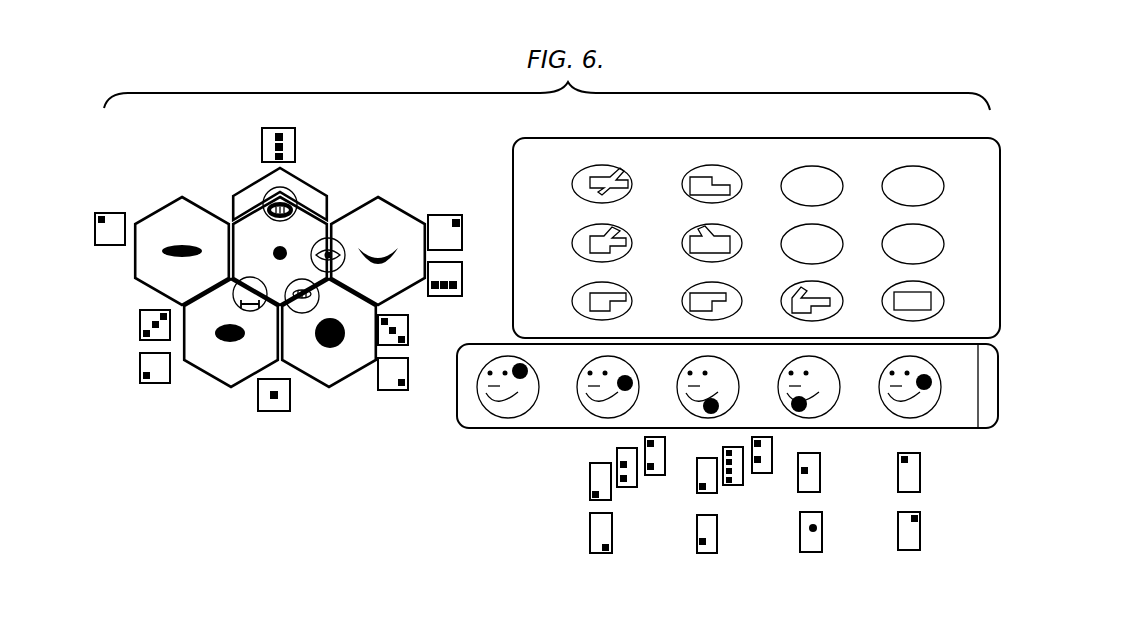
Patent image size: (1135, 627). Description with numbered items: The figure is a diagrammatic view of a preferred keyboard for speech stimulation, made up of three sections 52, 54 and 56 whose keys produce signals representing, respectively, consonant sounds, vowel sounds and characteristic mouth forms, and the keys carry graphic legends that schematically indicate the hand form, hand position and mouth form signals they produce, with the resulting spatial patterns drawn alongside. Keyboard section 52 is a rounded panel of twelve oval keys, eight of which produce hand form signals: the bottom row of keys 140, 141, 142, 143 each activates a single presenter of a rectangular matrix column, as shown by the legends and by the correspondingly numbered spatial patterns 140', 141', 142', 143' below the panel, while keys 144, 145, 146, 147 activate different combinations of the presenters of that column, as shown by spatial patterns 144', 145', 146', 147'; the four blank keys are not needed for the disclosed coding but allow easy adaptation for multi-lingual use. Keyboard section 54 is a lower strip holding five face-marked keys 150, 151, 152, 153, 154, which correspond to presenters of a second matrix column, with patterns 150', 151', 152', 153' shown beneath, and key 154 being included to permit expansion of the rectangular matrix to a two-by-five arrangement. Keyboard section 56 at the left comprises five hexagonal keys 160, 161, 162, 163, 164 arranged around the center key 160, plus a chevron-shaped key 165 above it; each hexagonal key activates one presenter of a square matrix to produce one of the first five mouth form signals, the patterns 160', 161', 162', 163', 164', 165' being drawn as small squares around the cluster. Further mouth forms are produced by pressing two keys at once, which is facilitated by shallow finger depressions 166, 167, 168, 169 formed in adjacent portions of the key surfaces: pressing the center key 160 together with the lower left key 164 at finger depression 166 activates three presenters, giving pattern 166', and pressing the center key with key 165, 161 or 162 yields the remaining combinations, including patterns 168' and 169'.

The keyboard section 52 is at (510, 133).
The keyboard section 54 is at (454, 432).
The keyboard section 56 is at (185, 155).
The key 140 is at (929, 290).
The key 141 is at (828, 290).
The key 142 is at (729, 290).
The key 143 is at (581, 295).
The key 144 is at (727, 231).
The key 145 is at (695, 174).
The key 146 is at (582, 177).
The key 147 is at (581, 236).
The key 150 is at (891, 382).
The key 151 is at (790, 382).
The key 152 is at (689, 382).
The key 153 is at (589, 382).
The key 154 is at (490, 358).
The center key 160 is at (232, 189).
The key 161 is at (329, 354).
The key 162 is at (378, 231).
The key 163 is at (182, 243).
The lower left key 164 is at (231, 352).
The chevron-shaped key 165 is at (302, 191).
The finger depression 166 is at (280, 254).
The finger depression 167 is at (286, 196).
The finger depression 168 is at (347, 247).
The finger depression 169 is at (324, 300).
The spatial pattern 140' is at (941, 472).
The spatial pattern 141' is at (834, 472).
The spatial pattern 142' is at (694, 464).
The spatial pattern 143' is at (570, 484).
The spatial pattern 144' is at (748, 479).
The spatial pattern 145' is at (792, 455).
The spatial pattern 146' is at (665, 474).
The spatial pattern 147' is at (590, 463).
The spatial pattern 150' is at (946, 531).
The spatial pattern 151' is at (840, 532).
The spatial pattern 152' is at (735, 534).
The spatial pattern 153' is at (627, 537).
The spatial pattern 160' is at (261, 410).
The spatial pattern 161' is at (404, 390).
The spatial pattern 162' is at (451, 215).
The spatial pattern 163' is at (107, 201).
The spatial pattern 164' is at (138, 389).
The spatial pattern 165' is at (257, 133).
The spatial pattern 166' is at (128, 314).
The spatial pattern 168' is at (466, 266).
The spatial pattern 169' is at (415, 326).